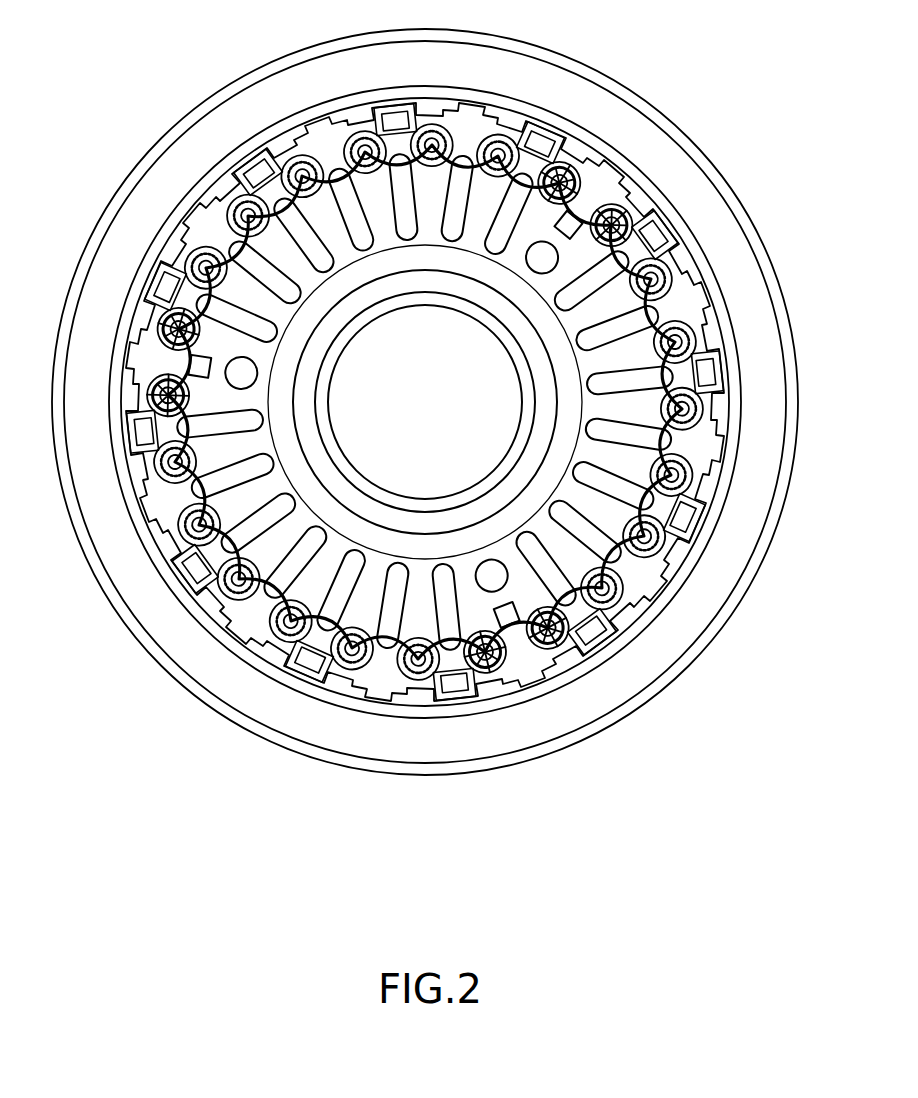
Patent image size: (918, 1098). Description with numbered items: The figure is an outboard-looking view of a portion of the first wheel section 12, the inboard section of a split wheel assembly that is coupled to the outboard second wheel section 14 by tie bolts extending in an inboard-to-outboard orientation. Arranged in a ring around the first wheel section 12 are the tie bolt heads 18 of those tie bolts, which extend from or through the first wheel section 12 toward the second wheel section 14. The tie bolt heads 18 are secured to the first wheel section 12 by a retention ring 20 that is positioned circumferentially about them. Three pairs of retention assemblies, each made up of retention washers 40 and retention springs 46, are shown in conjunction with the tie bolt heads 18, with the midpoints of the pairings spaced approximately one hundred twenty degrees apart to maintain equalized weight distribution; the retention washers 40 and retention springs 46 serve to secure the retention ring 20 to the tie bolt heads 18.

The first wheel section 12 is at (510, 712).
The second wheel section 14 is at (790, 496).
The tie bolt heads 18 is at (695, 340).
The retention ring 20 is at (357, 688).
The retention washers 40 is at (622, 224).
The retention springs 46 is at (560, 180).